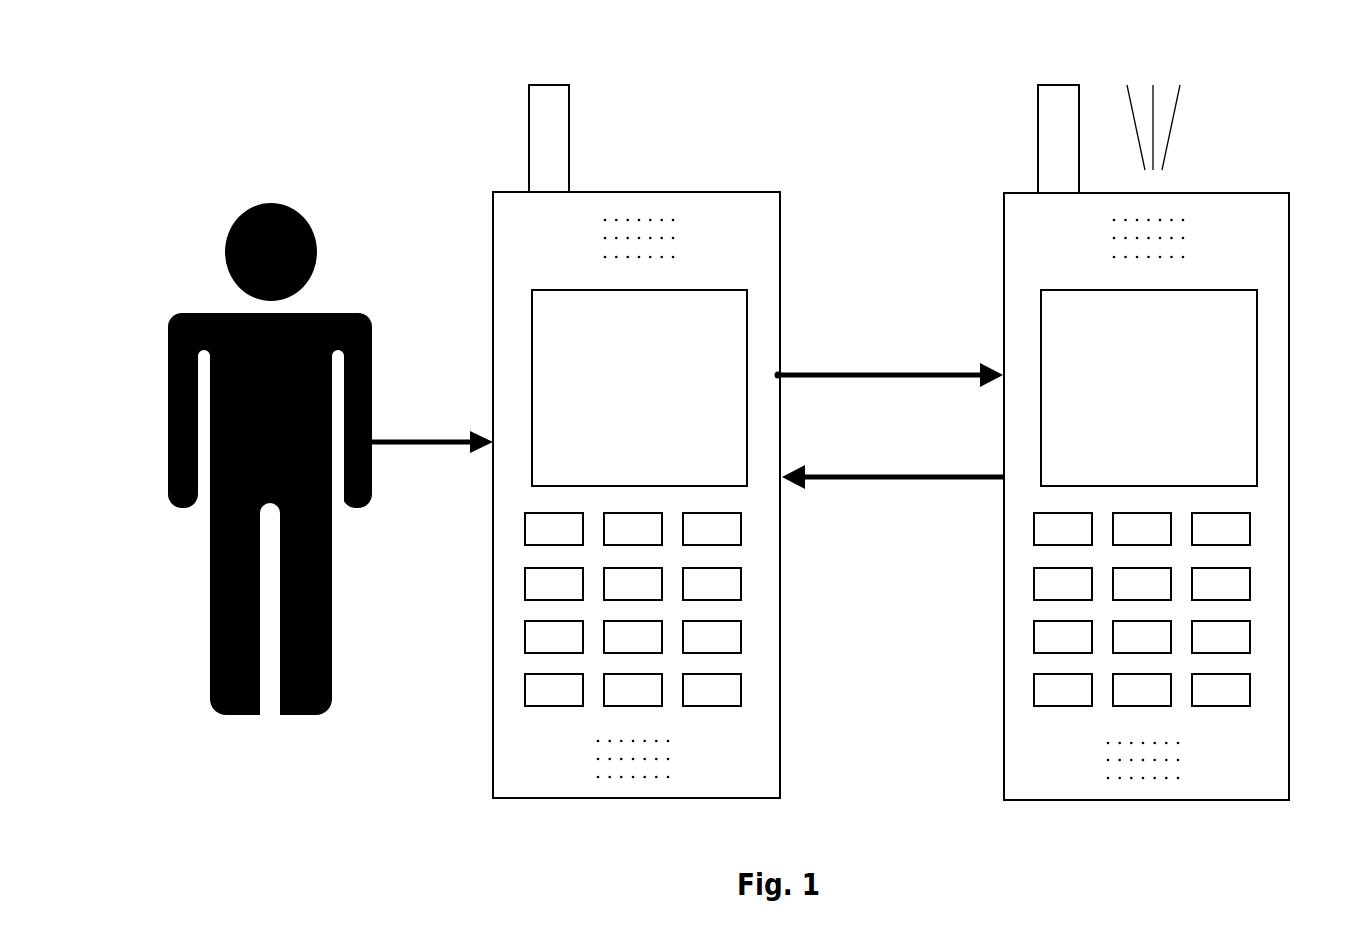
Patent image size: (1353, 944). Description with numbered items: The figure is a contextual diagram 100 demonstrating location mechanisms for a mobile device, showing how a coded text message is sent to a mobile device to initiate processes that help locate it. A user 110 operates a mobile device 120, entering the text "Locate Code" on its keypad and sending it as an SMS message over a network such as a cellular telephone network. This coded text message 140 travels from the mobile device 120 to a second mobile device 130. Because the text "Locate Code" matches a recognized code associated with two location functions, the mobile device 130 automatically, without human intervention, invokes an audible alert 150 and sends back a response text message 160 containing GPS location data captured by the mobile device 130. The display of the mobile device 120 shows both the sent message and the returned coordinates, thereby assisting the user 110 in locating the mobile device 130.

The contextual diagram 100 is at (730, 405).
The user 110 is at (270, 204).
The mobile device 120 is at (695, 192).
The mobile device 130 is at (1273, 193).
The coded text message 140 is at (737, 304).
The audible alert 150 is at (1161, 65).
The response text message 160 is at (670, 382).